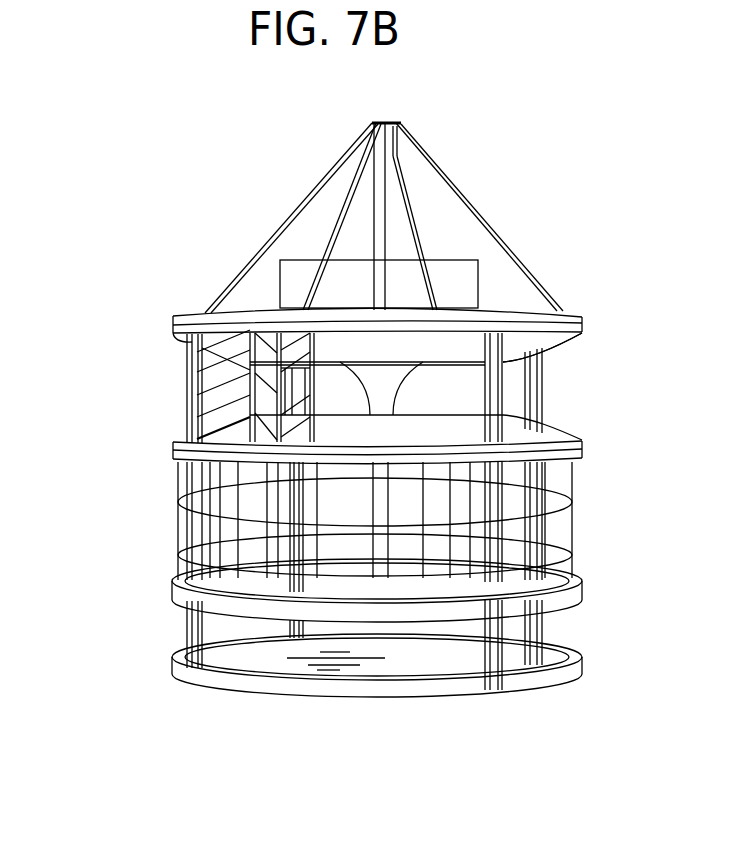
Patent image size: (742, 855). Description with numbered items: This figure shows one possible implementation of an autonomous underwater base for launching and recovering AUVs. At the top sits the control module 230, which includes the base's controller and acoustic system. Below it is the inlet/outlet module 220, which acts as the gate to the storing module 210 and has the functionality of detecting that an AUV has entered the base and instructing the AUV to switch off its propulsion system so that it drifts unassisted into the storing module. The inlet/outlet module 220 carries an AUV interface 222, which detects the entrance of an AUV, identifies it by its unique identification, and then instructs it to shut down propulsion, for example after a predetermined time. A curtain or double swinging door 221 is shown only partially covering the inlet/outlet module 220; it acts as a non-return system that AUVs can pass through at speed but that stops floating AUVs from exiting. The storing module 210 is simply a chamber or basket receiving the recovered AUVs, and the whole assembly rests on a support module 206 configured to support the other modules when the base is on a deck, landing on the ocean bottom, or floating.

The control module 230 is at (441, 240).
The AUV interface 222 is at (553, 345).
The inlet/outlet module 220 is at (558, 398).
The curtain or double swinging door 221 is at (220, 380).
The storing module 210 is at (603, 507).
The support module 206 is at (618, 644).